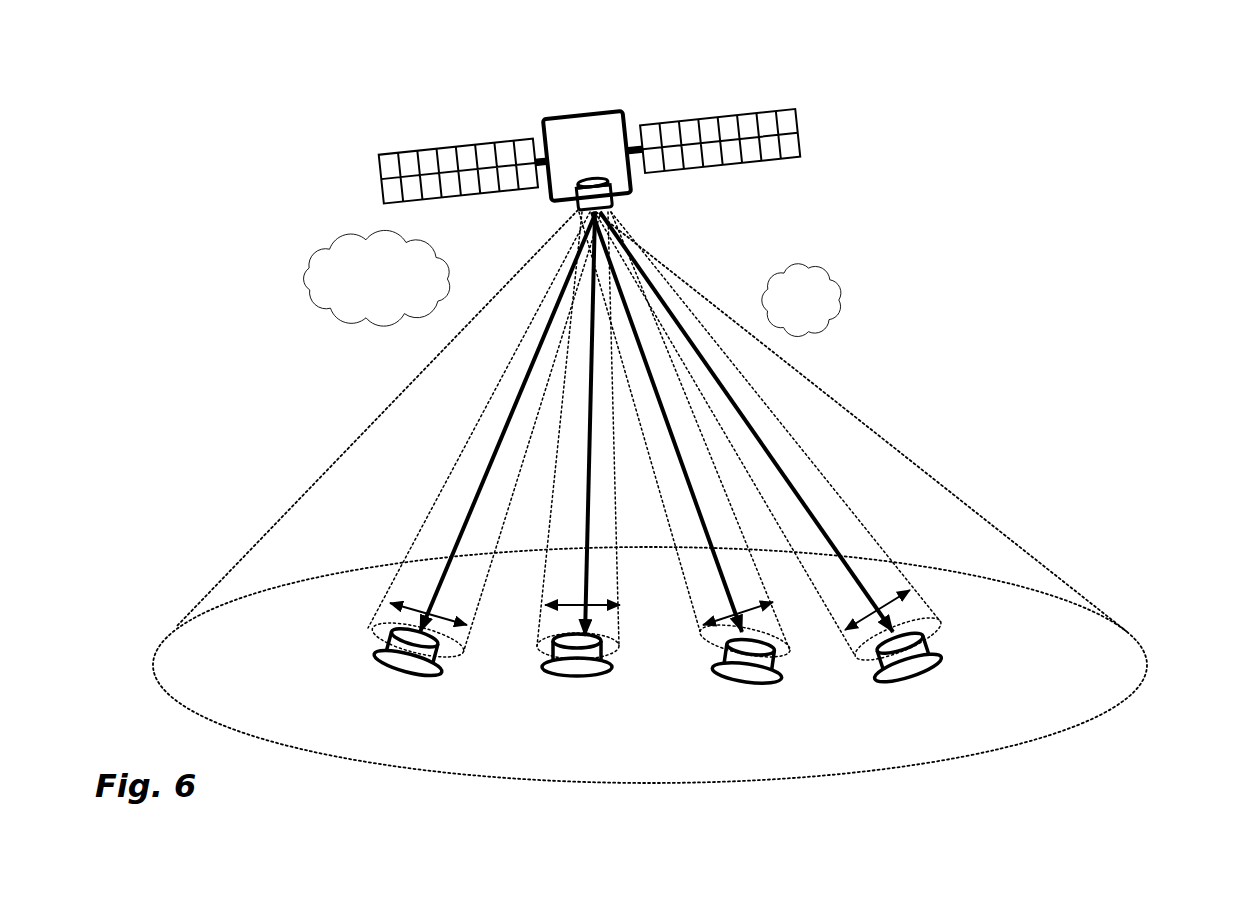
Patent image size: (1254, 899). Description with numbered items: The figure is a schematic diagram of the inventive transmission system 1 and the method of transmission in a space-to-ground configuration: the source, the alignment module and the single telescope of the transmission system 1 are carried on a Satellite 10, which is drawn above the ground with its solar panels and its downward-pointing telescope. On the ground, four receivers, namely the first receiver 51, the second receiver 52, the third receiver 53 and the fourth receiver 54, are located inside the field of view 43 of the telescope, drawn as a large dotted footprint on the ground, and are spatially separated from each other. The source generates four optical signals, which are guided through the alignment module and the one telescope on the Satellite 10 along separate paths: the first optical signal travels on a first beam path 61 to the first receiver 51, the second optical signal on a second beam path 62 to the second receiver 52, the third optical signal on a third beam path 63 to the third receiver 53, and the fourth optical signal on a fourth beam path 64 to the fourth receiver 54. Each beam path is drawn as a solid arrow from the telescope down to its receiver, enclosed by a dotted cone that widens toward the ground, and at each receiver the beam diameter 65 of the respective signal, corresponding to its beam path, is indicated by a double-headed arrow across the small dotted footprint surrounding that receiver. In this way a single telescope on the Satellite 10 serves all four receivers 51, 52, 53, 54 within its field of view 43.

The transmission system 1 is at (292, 184).
The Satellite 10 is at (585, 138).
The field of view 43 is at (1097, 677).
The first receiver 51 is at (408, 648).
The second receiver 52 is at (577, 657).
The third receiver 53 is at (753, 647).
The fourth receiver 54 is at (913, 650).
The first beam path 61 is at (433, 580).
The second beam path 62 is at (563, 620).
The third beam path 63 is at (720, 573).
The fourth beam path 64 is at (867, 580).
The beam diameter 65 is at (545, 605).